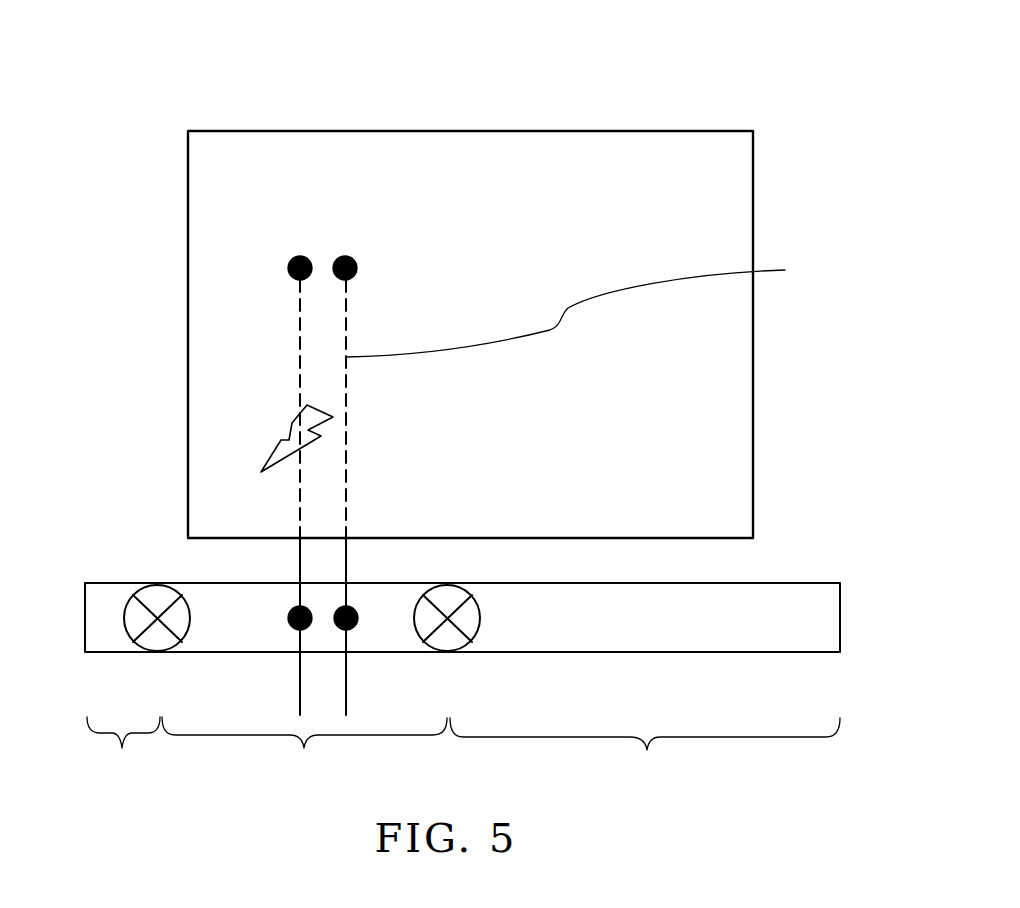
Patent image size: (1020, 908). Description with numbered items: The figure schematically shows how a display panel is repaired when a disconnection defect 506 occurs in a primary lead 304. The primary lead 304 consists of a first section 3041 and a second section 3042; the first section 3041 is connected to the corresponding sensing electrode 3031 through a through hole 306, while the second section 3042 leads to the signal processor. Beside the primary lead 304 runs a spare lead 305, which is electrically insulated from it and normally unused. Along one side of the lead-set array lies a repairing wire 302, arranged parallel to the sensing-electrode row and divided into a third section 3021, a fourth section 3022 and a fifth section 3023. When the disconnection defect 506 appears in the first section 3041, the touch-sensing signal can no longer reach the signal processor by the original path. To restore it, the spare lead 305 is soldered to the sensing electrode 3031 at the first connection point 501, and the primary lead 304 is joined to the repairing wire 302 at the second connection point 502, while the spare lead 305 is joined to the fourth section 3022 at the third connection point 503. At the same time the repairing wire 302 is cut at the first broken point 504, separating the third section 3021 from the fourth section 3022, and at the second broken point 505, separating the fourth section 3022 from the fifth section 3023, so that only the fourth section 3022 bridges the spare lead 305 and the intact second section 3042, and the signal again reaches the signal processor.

The sensing electrode 3031 is at (532, 133).
The repairing wire 302 is at (793, 583).
The primary lead 304 is at (170, 467).
The first section 3041 is at (300, 346).
The second section 3042 is at (194, 625).
The through hole 306 is at (299, 255).
The first connection point 501 is at (346, 255).
The spare lead 305 is at (588, 305).
The disconnection defect 506 is at (263, 463).
The second connection point 502 is at (293, 632).
The third connection point 503 is at (352, 632).
The first broken point 504 is at (152, 652).
The second broken point 505 is at (447, 653).
The third section 3021 is at (123, 747).
The fourth section 3022 is at (304, 747).
The fifth section 3023 is at (645, 748).